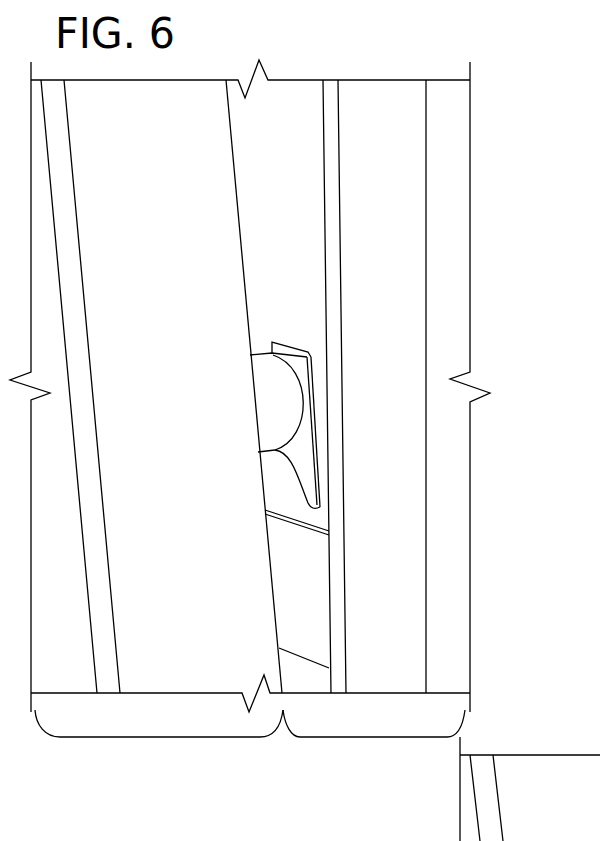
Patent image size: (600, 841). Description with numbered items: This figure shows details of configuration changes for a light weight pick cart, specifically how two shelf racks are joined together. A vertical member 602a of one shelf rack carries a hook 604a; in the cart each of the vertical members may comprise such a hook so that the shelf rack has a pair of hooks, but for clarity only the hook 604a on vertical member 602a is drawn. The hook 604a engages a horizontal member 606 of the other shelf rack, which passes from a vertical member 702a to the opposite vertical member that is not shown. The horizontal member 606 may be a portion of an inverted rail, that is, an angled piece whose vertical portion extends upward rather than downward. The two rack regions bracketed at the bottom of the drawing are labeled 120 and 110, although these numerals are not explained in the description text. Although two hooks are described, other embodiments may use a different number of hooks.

The vertical member 702a is at (402, 165).
The hook 604a is at (288, 352).
The vertical member 602a is at (139, 433).
The horizontal member 606 is at (300, 590).
The first wall section 120 is at (160, 737).
The second wall section 110 is at (374, 737).